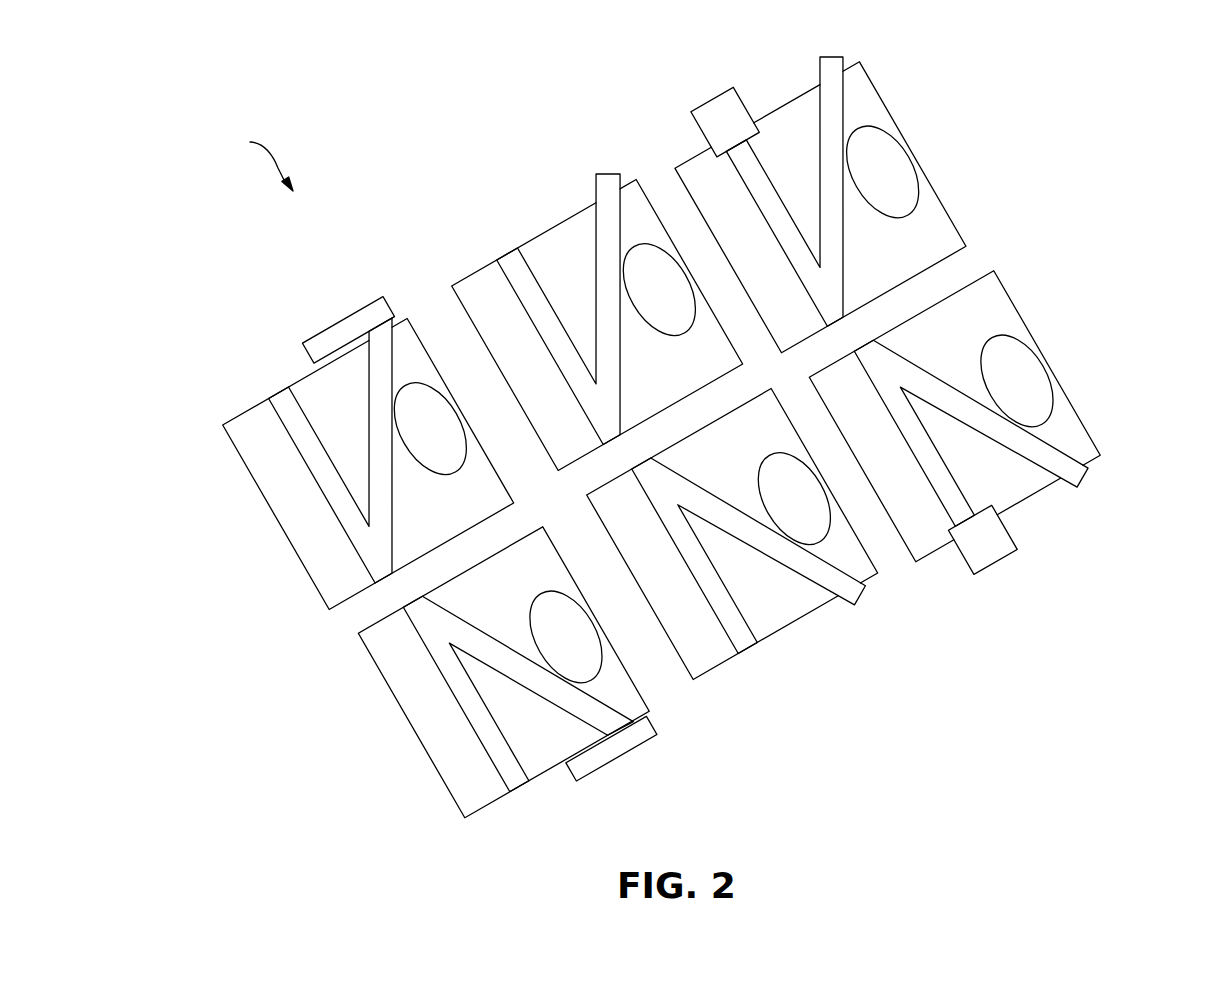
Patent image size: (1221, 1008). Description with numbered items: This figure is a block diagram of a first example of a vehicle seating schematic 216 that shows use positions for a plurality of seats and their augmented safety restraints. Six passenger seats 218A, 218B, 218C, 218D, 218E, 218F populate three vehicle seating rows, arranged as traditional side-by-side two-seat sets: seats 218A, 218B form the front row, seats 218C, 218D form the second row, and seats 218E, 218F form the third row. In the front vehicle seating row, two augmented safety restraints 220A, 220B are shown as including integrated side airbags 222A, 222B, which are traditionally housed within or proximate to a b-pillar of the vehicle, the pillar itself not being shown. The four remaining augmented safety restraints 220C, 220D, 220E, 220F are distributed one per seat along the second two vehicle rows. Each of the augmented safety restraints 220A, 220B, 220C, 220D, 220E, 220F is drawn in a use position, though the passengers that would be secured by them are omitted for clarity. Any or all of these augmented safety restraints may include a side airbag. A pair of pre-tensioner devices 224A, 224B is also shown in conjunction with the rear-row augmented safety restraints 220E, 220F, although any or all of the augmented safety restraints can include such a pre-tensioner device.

The vehicle seating schematic 216 is at (250, 165).
The passenger seat 218A is at (466, 819).
The passenger seat 218B is at (227, 424).
The passenger seat 218C is at (694, 680).
The passenger seat 218D is at (473, 274).
The passenger seat 218E is at (918, 565).
The passenger seat 218F is at (803, 93).
The augmented safety restraint 220A is at (517, 790).
The augmented safety restraint 220B is at (288, 386).
The augmented safety restraint 220C is at (756, 643).
The augmented safety restraint 220D is at (527, 241).
The augmented safety restraint 220E is at (1080, 486).
The augmented safety restraint 220F is at (830, 57).
The integrated side airbag 222A is at (626, 753).
The integrated side airbag 222B is at (347, 317).
The pre-tensioner device 224A is at (1014, 551).
The pre-tensioner device 224B is at (691, 112).